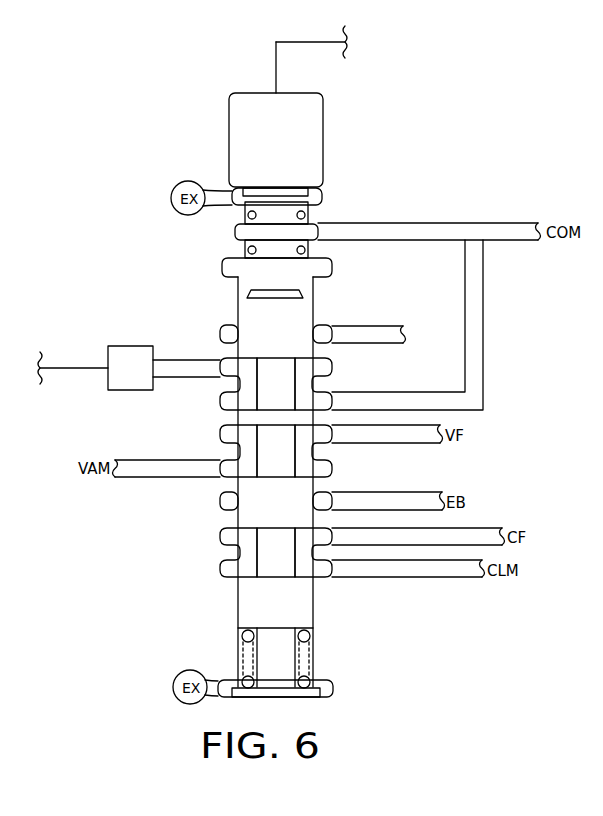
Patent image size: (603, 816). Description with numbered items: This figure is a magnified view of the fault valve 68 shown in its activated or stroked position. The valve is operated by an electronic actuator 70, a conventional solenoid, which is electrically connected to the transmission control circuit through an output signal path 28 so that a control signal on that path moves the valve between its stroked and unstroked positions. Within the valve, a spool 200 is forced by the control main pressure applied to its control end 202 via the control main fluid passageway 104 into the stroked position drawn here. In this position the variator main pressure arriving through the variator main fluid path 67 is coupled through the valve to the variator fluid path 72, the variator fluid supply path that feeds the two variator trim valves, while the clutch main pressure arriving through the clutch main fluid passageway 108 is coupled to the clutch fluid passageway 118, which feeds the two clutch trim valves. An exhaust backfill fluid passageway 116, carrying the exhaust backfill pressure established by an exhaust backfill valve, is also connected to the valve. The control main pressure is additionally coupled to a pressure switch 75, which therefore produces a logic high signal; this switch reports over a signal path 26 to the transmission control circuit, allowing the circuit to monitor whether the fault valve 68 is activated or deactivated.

The fault valve 68 is at (457, 118).
The electronic actuator 70 is at (325, 136).
The output signal path 28 is at (275, 70).
The control end 202 is at (277, 291).
The control main fluid passageway 104 is at (508, 222).
The variator fluid path 72 is at (363, 445).
The exhaust backfill fluid passageway 116 is at (365, 323).
The clutch fluid passageway 118 is at (477, 527).
The clutch main fluid passageway 108 is at (412, 580).
The variator main fluid path 67 is at (143, 480).
The pressure switch 75 is at (135, 344).
The signal path 26 is at (68, 365).
The spool 200 is at (238, 595).